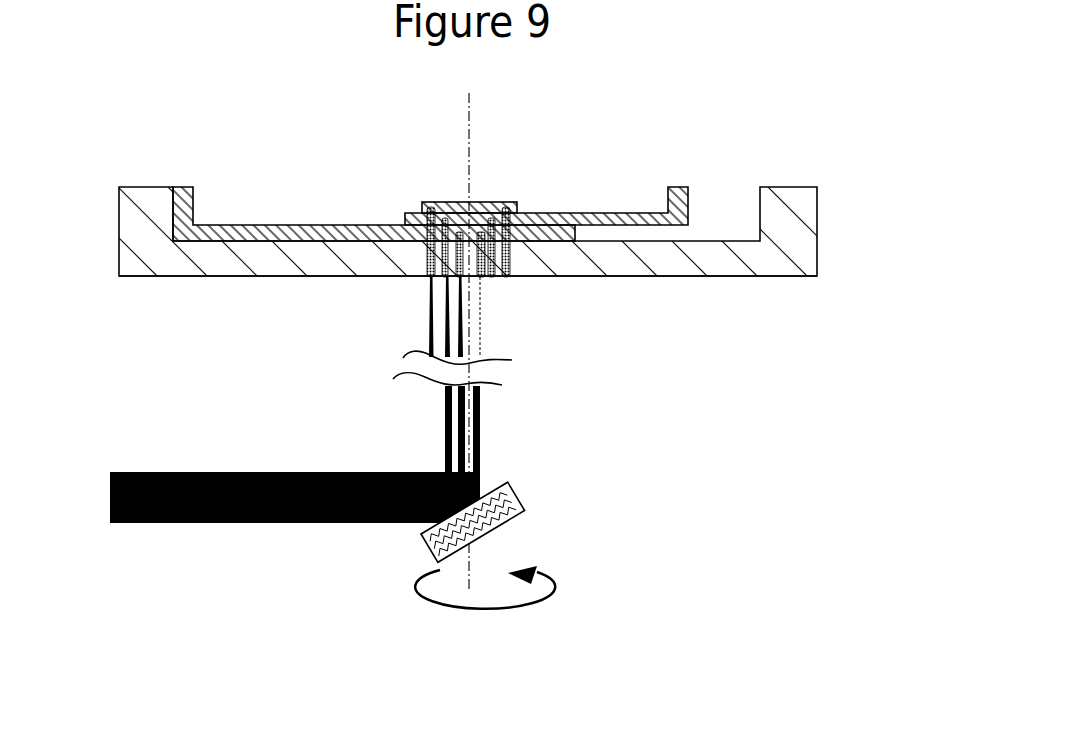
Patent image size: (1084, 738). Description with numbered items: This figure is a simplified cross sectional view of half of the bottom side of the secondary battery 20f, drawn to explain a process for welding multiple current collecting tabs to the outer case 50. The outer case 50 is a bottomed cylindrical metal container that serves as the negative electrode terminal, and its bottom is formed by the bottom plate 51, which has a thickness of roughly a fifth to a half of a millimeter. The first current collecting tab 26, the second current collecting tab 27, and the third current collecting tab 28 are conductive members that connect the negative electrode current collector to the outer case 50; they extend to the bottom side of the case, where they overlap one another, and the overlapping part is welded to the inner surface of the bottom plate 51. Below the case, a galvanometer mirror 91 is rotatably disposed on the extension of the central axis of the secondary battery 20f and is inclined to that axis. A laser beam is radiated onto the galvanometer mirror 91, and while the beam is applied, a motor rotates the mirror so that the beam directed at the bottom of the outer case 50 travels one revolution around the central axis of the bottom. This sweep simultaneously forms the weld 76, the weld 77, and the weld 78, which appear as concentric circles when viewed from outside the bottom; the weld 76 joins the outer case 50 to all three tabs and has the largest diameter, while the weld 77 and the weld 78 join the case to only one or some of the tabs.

The secondary battery 20f is at (726, 128).
The outer case 50 is at (824, 219).
The bottom plate 51 is at (275, 277).
The first current collecting tab 26 is at (222, 241).
The second current collecting tab 27 is at (657, 241).
The third current collecting tab 28 is at (492, 202).
The weld 76 is at (427, 255).
The weld 77 is at (481, 277).
The weld 78 is at (423, 277).
The galvanometer mirror 91 is at (524, 504).